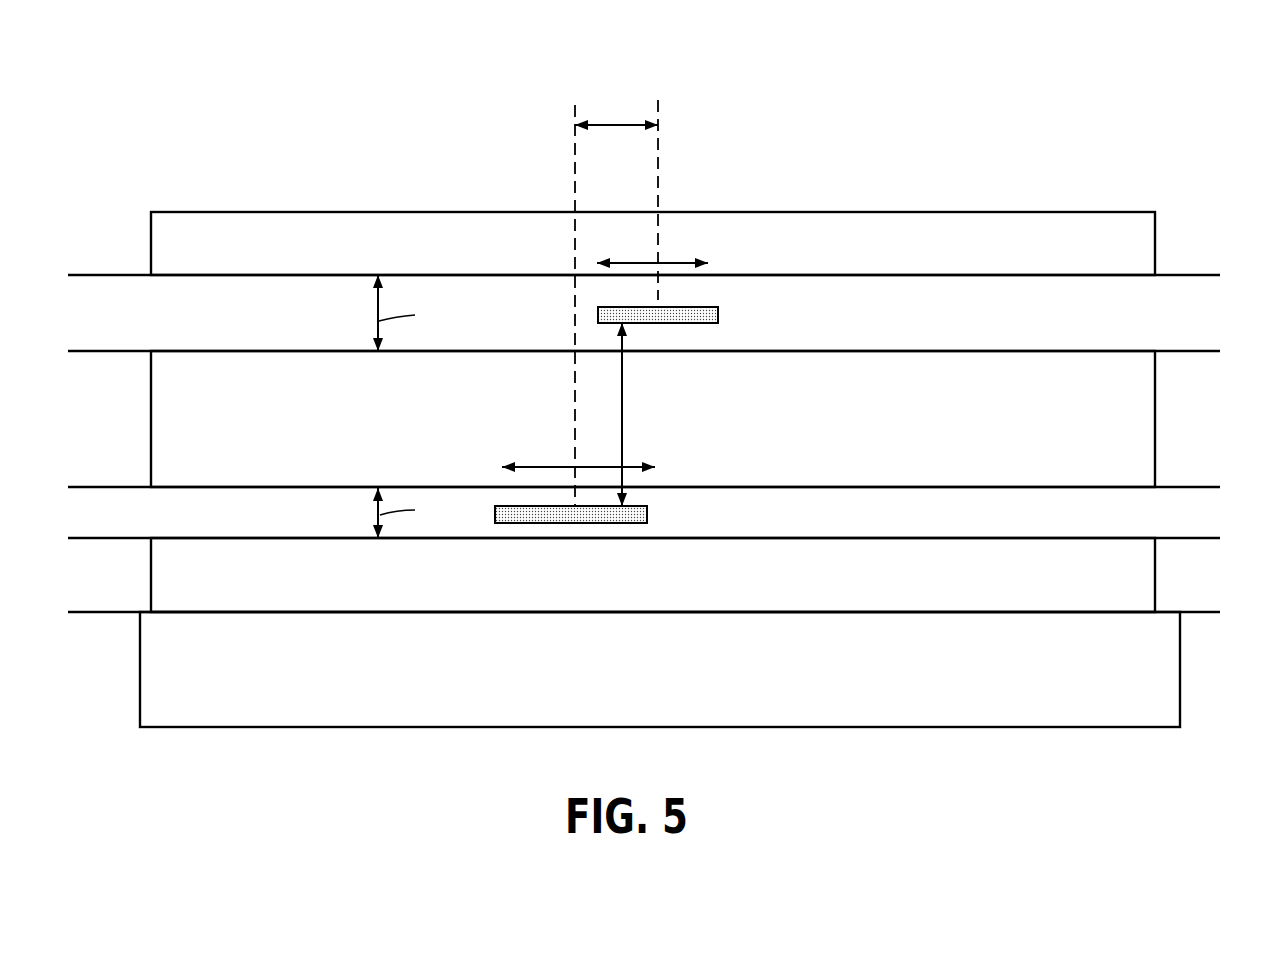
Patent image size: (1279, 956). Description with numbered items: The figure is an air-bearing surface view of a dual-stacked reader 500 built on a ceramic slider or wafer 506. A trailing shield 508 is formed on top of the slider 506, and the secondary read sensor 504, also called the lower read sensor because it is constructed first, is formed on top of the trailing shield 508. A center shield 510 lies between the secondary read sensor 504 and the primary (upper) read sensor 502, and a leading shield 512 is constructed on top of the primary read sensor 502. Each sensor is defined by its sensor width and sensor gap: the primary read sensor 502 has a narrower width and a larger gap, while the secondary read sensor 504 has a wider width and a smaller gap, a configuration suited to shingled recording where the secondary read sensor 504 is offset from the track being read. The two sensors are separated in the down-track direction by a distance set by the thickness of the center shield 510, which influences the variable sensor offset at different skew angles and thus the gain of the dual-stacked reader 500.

The dual-stacked reader 500 is at (158, 144).
The primary read sensor 502 is at (697, 307).
The secondary read sensor 504 is at (647, 521).
The ceramic slider 506 is at (1181, 670).
The trailing shield 508 is at (1157, 580).
The center shield 510 is at (1157, 412).
The leading shield 512 is at (1157, 242).